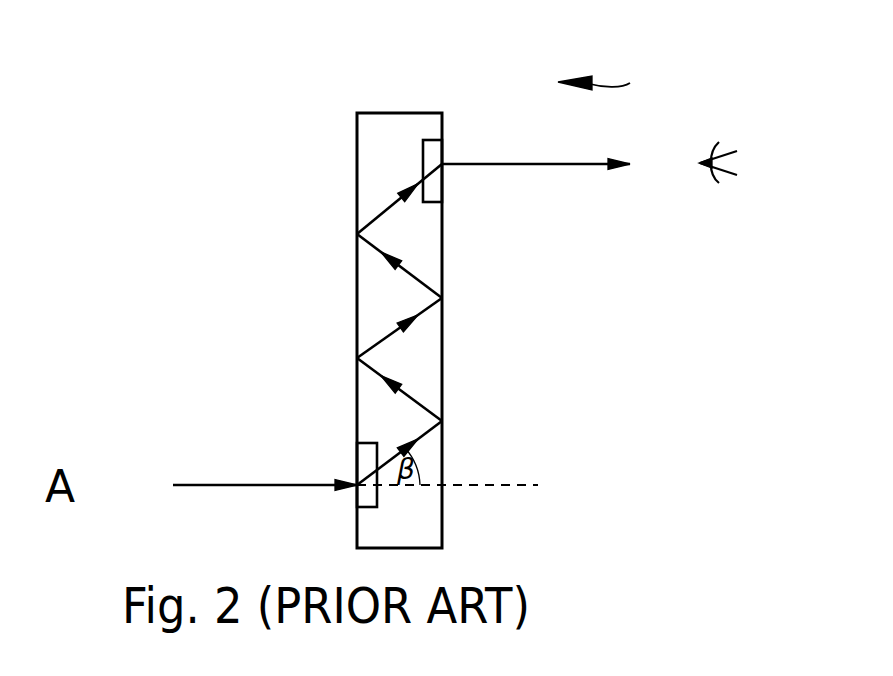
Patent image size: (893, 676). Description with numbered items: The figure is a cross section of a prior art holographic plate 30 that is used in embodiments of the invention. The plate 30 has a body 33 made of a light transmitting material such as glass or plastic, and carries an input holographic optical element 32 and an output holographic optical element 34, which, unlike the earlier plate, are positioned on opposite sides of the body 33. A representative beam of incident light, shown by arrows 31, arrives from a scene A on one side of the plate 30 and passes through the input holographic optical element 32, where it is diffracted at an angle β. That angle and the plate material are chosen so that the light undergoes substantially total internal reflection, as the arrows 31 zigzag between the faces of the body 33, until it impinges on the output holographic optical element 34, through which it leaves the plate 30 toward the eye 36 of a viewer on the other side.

The plate 30 is at (635, 82).
The arrows 31 is at (260, 483).
The input holographic optical element 32 is at (353, 500).
The body 33 is at (368, 132).
The output holographic optical element 34 is at (435, 157).
The eye 36 is at (723, 147).